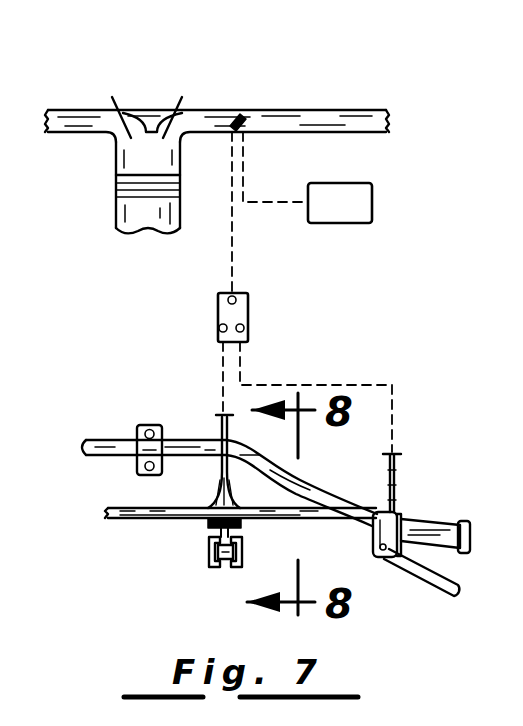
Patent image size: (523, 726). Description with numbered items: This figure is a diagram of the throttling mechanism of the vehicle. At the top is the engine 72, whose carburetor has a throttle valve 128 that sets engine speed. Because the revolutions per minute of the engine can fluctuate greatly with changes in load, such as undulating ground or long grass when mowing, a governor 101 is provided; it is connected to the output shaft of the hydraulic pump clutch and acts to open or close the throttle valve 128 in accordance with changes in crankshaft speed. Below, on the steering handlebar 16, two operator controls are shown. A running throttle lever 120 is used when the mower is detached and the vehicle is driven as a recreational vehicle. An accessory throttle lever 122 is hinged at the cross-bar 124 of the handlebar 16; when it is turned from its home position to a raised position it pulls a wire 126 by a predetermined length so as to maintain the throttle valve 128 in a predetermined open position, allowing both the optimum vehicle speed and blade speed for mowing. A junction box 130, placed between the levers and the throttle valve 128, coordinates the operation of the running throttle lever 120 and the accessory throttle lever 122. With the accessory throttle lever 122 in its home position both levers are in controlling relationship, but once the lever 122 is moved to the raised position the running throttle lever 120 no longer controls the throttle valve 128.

The engine 72 is at (113, 157).
The throttle valve 128 is at (246, 121).
The governor 101 is at (372, 194).
The junction box 130 is at (248, 303).
The wire 126 is at (220, 387).
The steering handlebar 16 is at (113, 440).
The cross-bar 124 is at (137, 518).
The accessory throttle lever 122 is at (208, 550).
The running throttle lever 120 is at (423, 582).